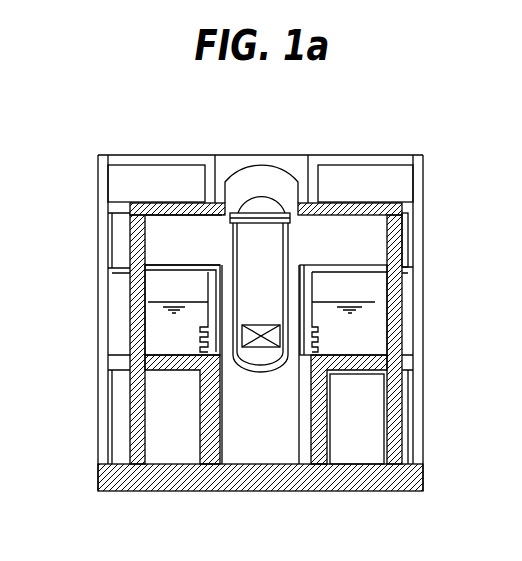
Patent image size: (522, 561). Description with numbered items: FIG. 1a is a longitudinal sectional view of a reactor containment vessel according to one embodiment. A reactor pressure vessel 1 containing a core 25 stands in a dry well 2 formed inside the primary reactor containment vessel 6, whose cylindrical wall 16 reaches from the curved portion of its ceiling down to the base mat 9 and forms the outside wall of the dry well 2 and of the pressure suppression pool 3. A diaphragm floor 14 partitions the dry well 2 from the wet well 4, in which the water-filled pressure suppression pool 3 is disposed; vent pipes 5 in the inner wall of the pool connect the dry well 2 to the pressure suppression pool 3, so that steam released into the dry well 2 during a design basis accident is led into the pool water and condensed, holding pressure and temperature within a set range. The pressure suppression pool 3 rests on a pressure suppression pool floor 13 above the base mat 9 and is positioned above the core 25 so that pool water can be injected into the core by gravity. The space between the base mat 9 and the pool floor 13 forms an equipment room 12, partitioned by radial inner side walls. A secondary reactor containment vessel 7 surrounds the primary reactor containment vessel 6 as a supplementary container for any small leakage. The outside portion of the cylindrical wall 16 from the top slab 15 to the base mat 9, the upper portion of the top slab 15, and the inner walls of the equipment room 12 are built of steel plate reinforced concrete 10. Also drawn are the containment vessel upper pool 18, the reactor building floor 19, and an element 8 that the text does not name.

The reactor pressure vessel 1 is at (277, 244).
The dry well 2 is at (157, 247).
The pressure suppression pool 3 is at (380, 312).
The wet well 4 is at (157, 285).
The vent pipe 5 is at (305, 290).
The primary reactor containment vessel 6 is at (182, 202).
The secondary reactor containment vessel 7 is at (408, 224).
The outer containment wall 8 is at (424, 242).
The base mat 9 is at (413, 477).
The steel plate reinforced concrete 10 is at (394, 428).
The equipment room 12 is at (350, 456).
The pressure suppression pool floor 13 is at (167, 362).
The diaphragm floor 14 is at (375, 268).
The top slab 15 is at (123, 207).
The cylindrical wall 16 is at (393, 355).
The containment vessel upper pool 18 is at (405, 178).
The reactor building floor 19 is at (350, 153).
The core 25 is at (260, 347).